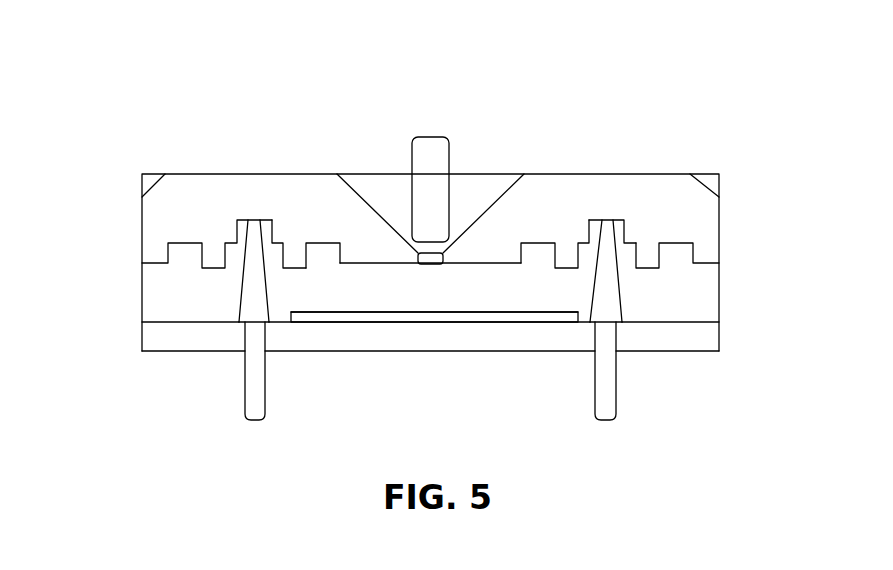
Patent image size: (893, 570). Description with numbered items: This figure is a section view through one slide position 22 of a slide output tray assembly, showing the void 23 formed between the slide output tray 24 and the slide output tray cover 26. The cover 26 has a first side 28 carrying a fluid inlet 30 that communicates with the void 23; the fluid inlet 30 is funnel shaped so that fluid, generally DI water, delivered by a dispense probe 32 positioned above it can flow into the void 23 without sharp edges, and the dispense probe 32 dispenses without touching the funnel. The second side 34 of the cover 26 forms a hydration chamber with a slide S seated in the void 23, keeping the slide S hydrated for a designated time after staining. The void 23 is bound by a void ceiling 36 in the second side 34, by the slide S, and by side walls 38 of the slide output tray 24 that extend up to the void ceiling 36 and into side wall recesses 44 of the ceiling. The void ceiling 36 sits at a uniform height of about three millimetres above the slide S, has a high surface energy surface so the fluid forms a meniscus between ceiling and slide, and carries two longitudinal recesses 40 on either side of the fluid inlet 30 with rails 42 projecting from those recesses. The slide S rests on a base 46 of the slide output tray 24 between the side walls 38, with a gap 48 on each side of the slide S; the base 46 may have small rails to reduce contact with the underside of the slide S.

The slide position 22 is at (195, 95).
The void 23 is at (509, 301).
The slide output tray 24 is at (325, 342).
The slide output tray cover 26 is at (177, 192).
The first side 28 is at (662, 174).
The fluid inlet 30 is at (350, 187).
The dispense probe 32 is at (433, 137).
The second side 34 is at (640, 270).
The void ceiling 36 is at (397, 267).
The side walls 38 is at (268, 295).
The recesses 40 is at (327, 257).
The rails 42 is at (285, 270).
The side wall recesses 44 is at (260, 220).
The base 46 is at (470, 325).
The gap 48 is at (268, 322).
The slide S is at (410, 317).